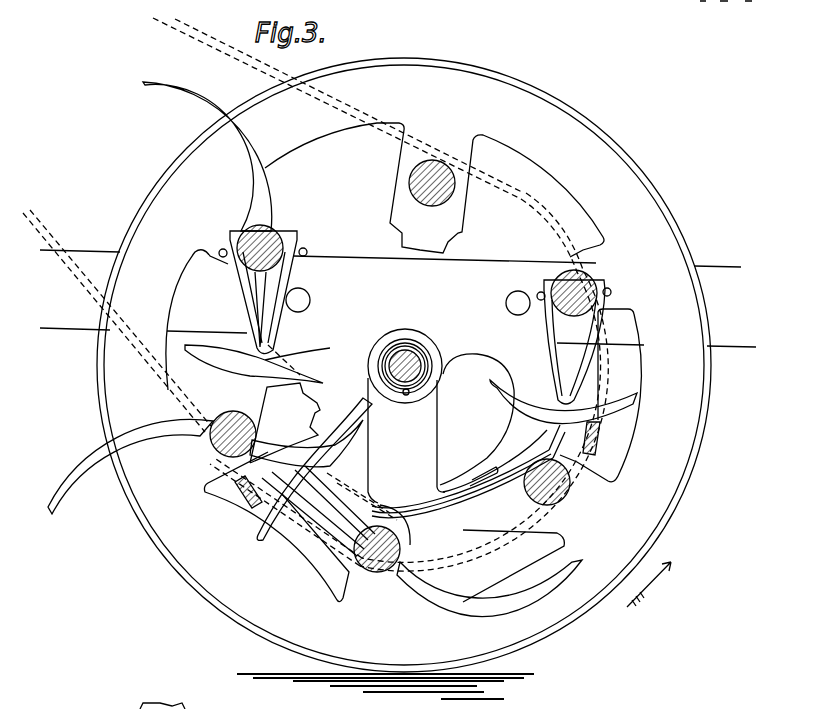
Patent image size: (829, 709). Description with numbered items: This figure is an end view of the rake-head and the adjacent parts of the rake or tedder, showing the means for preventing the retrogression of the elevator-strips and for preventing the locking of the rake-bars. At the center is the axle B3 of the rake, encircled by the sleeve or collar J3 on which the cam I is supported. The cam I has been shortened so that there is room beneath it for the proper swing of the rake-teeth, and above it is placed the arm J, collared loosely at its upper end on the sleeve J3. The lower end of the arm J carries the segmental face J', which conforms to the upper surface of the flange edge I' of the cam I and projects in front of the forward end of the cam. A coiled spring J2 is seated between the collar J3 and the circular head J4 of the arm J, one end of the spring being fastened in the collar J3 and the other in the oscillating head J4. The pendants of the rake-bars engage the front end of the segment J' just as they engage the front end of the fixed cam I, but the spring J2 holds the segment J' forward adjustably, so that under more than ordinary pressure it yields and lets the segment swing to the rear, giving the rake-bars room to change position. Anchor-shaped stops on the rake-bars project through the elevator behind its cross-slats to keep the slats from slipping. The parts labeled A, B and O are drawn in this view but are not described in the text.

The shaft/belt line A is at (398, 298).
The wheel rim B is at (470, 106).
The axle B3 is at (418, 352).
The cam I is at (477, 419).
The flange edge I' is at (468, 471).
The arm J is at (406, 416).
The segmental face J' is at (473, 471).
The coiled spring J2 is at (408, 396).
The sleeve J3 is at (405, 339).
The circular head J4 is at (434, 379).
The cord path O is at (315, 294).